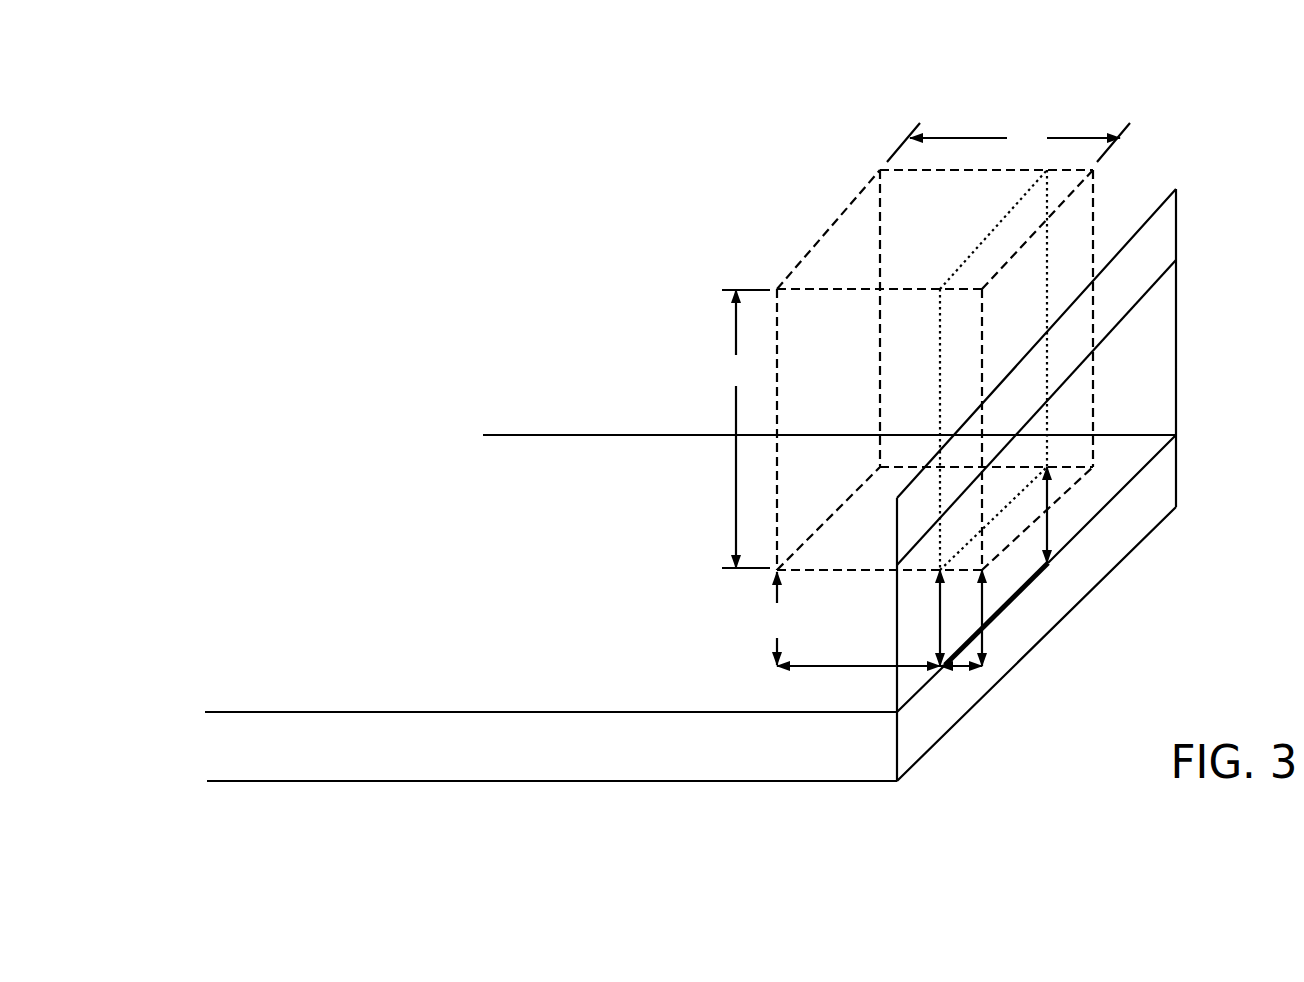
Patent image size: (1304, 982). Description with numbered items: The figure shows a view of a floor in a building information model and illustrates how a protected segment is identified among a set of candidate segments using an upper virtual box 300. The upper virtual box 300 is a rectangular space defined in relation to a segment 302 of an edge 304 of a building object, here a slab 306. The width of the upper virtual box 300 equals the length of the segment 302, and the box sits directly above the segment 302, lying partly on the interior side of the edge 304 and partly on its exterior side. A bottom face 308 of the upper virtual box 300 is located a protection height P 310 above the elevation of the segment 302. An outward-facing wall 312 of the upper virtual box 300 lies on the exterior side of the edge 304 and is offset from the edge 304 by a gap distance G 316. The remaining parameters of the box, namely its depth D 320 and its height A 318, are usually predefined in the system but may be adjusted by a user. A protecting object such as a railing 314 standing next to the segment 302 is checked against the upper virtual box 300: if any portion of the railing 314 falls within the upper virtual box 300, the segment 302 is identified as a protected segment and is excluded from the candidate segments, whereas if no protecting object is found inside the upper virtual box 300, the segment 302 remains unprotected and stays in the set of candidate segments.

The upper virtual box 300 is at (927, 192).
The segment 302 is at (1027, 588).
The edge 304 is at (1153, 462).
The slab 306 is at (540, 460).
The bottom face 308 is at (826, 583).
The protection height P 310 is at (775, 652).
The outward-facing wall 312 is at (1078, 217).
The railing 314 is at (1176, 222).
The gap distance G 316 is at (967, 667).
The height A 318 is at (735, 490).
The depth D 320 is at (1079, 138).